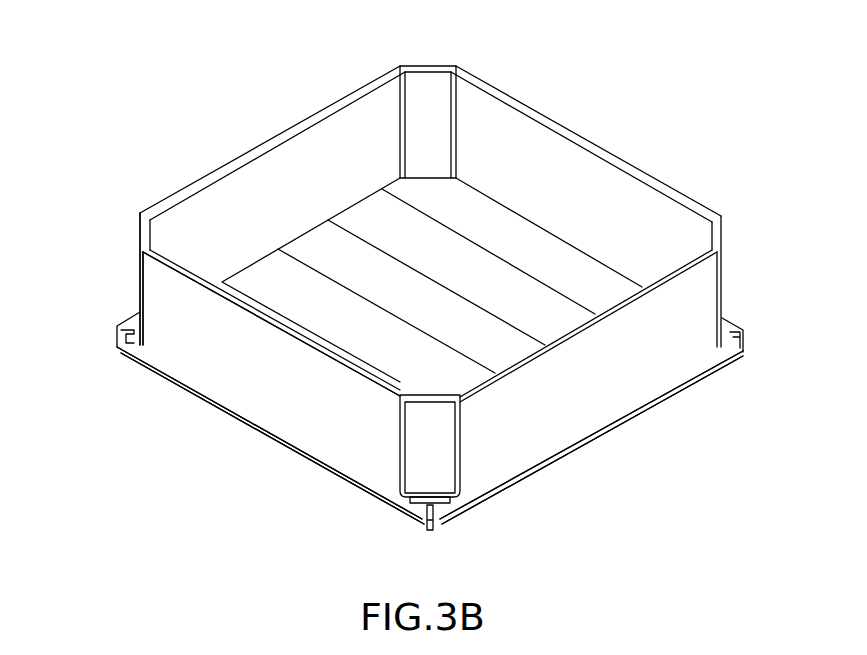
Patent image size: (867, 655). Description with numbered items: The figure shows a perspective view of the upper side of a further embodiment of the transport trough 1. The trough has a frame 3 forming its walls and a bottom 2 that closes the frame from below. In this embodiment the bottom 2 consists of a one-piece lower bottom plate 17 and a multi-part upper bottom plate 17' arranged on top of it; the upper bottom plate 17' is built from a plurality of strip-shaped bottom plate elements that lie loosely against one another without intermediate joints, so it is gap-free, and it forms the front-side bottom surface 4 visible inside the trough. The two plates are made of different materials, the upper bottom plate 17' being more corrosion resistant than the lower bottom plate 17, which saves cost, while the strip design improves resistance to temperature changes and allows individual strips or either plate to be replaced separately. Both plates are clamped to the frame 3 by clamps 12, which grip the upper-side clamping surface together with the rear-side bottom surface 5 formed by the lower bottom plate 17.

The transport trough 1 is at (178, 177).
The bottom 2 is at (166, 392).
The frame 3 is at (153, 288).
The front-side bottom surface 4 is at (430, 292).
The upper bottom plate 17' is at (430, 292).
The rear-side bottom surface 5 is at (356, 535).
The lower bottom plate 17 is at (430, 517).
The clamp 12 is at (452, 520).